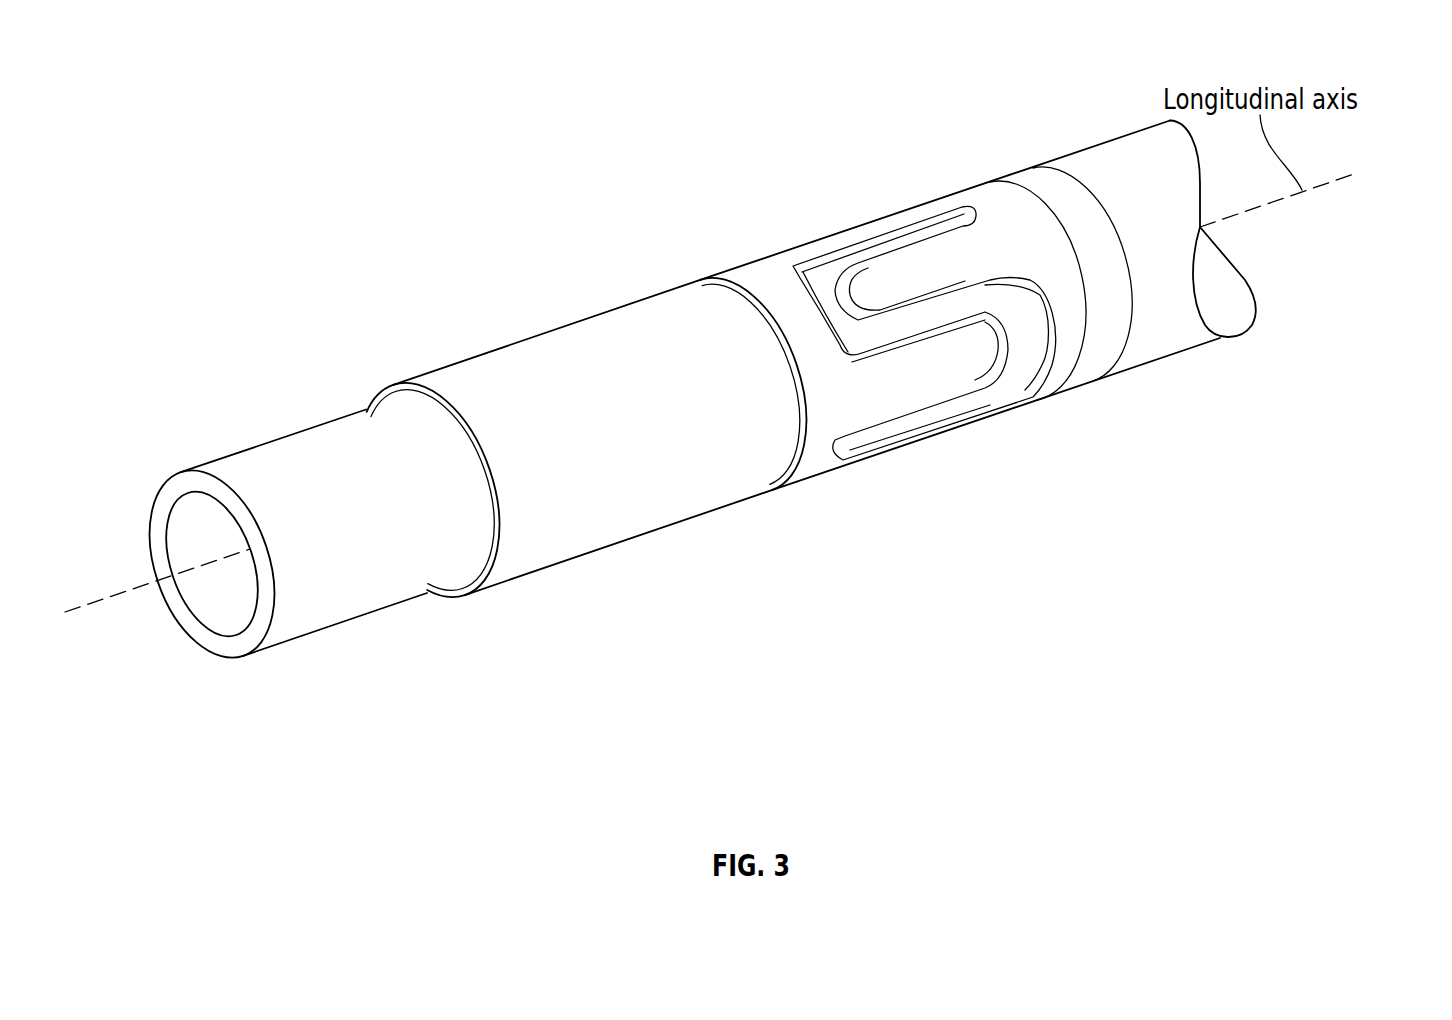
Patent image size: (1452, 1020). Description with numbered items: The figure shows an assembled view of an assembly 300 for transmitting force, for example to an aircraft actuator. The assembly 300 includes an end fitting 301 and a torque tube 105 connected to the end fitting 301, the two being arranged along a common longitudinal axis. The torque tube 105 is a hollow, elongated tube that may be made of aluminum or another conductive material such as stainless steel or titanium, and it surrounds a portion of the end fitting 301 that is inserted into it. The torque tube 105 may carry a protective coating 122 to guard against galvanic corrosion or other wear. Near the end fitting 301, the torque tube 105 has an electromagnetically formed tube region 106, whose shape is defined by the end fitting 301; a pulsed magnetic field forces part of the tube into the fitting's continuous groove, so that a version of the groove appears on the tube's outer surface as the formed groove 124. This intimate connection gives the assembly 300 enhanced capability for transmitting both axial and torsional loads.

The assembly 300 is at (362, 214).
The end fitting 301 is at (635, 542).
The torque tube 105 is at (1080, 380).
The electromagnetically formed tube region 106 is at (1018, 155).
The protective coating 122 is at (1185, 343).
The groove formed on outer surface of torque tube 124 is at (940, 437).